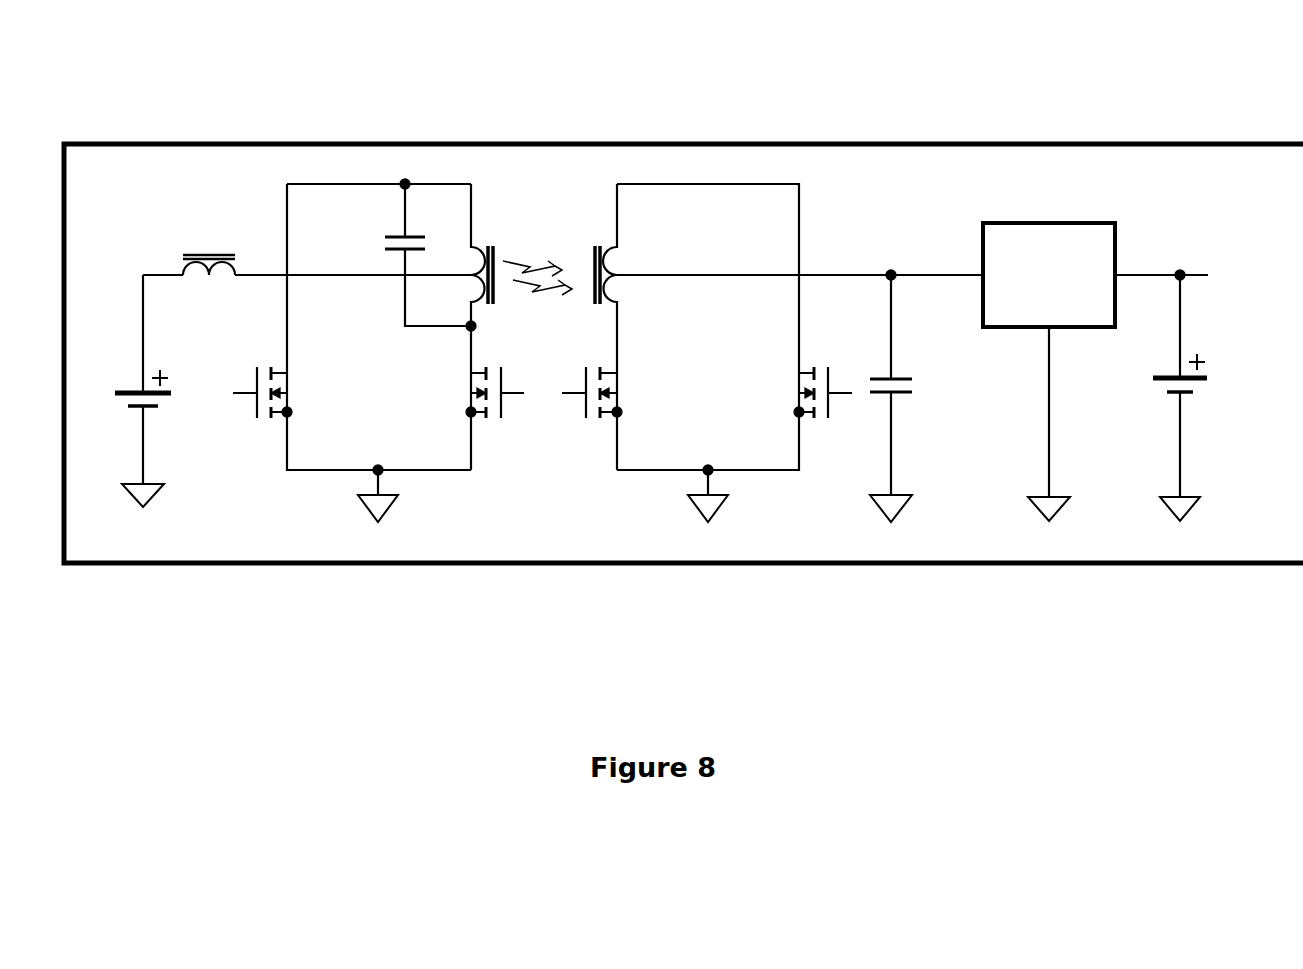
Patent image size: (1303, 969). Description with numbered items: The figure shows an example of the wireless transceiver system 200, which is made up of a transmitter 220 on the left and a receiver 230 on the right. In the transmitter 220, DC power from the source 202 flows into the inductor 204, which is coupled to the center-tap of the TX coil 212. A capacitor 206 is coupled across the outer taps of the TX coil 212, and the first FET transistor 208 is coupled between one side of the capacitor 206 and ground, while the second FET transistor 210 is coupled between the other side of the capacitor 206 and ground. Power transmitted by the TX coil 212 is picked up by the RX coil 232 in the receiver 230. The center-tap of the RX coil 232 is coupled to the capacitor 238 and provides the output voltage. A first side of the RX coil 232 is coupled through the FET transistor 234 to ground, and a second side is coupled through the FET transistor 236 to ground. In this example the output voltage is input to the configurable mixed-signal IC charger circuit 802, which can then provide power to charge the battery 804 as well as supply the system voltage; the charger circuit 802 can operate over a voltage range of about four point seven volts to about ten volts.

The transceiver system 200 is at (130, 127).
The source 202 is at (123, 367).
The inductor 204 is at (188, 242).
The capacitor 206 is at (393, 232).
The first FET transistor 208 is at (247, 382).
The second FET transistor 210 is at (467, 378).
The TX coil 212 is at (482, 223).
The transmitter 220 is at (258, 243).
The receiver 230 is at (763, 167).
The RX coil 232 is at (575, 257).
The FET transistor 234 is at (578, 398).
The FET transistor 236 is at (783, 383).
The capacitor 238 is at (897, 407).
The CMIC charger circuit 802 is at (1025, 245).
The battery 804 is at (1182, 353).